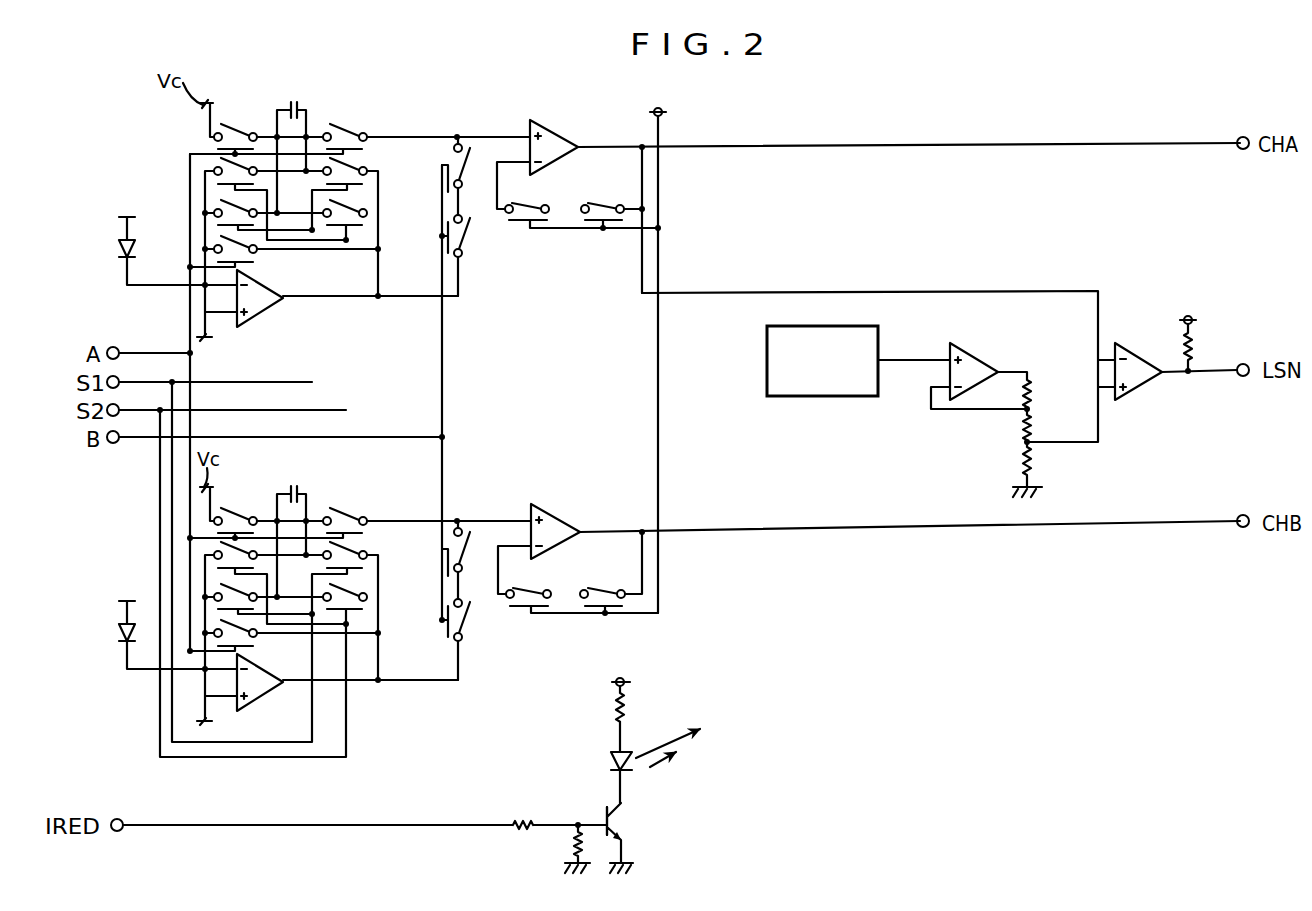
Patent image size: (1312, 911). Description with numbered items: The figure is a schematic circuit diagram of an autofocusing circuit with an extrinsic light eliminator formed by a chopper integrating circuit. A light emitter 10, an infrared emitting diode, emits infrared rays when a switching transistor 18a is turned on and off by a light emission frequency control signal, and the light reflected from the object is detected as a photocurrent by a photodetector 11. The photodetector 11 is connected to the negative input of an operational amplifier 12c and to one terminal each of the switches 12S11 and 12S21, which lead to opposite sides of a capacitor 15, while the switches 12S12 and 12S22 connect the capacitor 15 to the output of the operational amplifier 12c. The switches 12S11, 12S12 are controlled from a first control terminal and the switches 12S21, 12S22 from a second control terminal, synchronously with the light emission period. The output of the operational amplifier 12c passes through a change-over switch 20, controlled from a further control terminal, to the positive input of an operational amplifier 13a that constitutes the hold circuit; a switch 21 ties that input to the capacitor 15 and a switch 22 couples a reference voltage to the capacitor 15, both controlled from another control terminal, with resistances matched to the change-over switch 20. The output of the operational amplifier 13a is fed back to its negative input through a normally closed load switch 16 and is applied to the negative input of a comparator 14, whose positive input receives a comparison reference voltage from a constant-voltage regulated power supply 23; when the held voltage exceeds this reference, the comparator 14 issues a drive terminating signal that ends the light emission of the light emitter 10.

The light emitter 10 is at (633, 757).
The photodetector 11 is at (118, 249).
The operational amplifier 12c is at (252, 318).
The switch 12S11 is at (233, 200).
The switch 12S12 is at (357, 164).
The switch 12S21 is at (233, 154).
The switch 12S22 is at (350, 202).
The operational amplifier 13a is at (558, 121).
The comparator 14 is at (1137, 349).
The capacitor 15 is at (298, 108).
The load switch 16 is at (571, 208).
The switching transistor 18a is at (622, 818).
The change-over switch 20 is at (471, 188).
The switch 21 is at (350, 122).
The switch 22 is at (234, 124).
The constant-voltage regulated power supply 23 is at (878, 326).